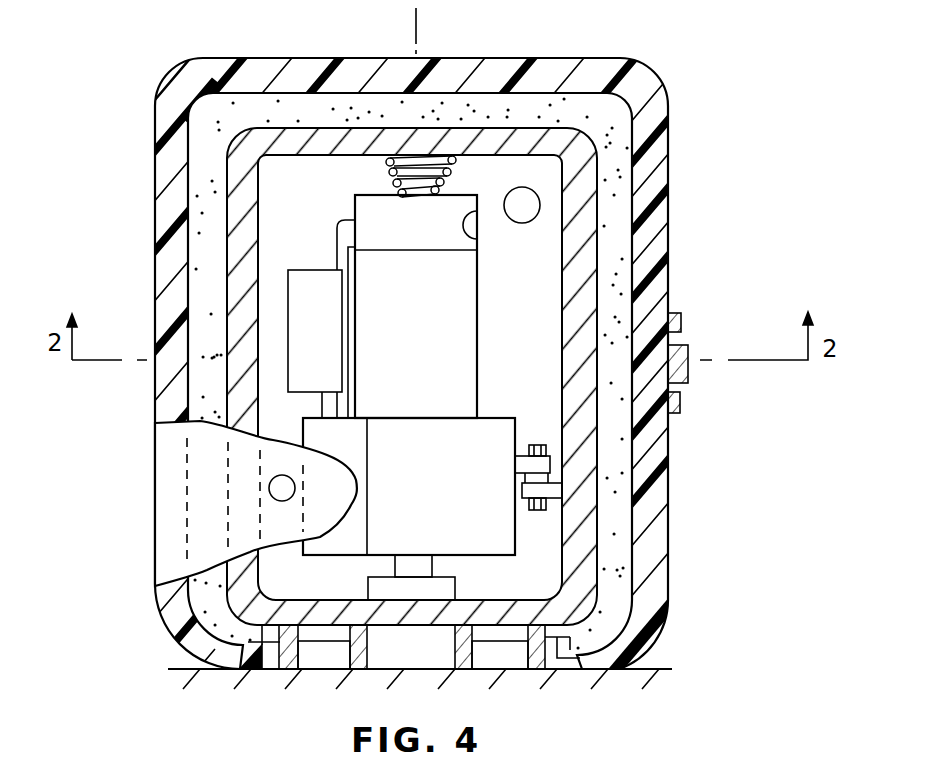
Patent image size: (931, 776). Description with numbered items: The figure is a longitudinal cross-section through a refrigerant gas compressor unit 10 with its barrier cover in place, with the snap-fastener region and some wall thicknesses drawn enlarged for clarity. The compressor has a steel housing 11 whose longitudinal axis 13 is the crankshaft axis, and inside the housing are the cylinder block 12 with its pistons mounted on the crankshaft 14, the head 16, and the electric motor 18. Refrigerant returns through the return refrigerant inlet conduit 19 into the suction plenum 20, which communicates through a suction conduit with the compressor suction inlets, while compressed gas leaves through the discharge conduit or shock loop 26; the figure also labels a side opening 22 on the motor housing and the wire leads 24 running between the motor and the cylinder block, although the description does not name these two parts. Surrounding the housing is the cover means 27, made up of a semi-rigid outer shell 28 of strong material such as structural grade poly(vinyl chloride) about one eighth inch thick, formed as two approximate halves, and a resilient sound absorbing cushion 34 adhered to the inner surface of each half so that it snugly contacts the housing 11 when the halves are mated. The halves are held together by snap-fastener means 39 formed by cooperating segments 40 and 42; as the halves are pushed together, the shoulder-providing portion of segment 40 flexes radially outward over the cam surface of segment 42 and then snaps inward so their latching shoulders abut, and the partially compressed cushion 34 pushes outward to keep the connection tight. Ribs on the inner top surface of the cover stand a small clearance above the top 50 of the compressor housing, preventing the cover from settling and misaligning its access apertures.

The compressor unit 10 is at (404, 374).
The steel housing 11 is at (580, 152).
The cylinder block 12 is at (413, 506).
The longitudinal axis 13 is at (416, 23).
The crankshaft 14 is at (388, 563).
The head 16 is at (340, 432).
The electric motor 18 is at (398, 336).
The return refrigerant inlet conduit 19 is at (540, 203).
The suction plenum 20 is at (370, 207).
The side contact 22 is at (470, 228).
The wire leads 24 is at (338, 242).
The discharge conduit or shock loop 26 is at (270, 488).
The cover means 27 is at (668, 215).
The semi-rigid outer shell 28 is at (404, 389).
The resilient sound absorbing cushion 34 is at (603, 287).
The snap-fastener means 39 is at (700, 392).
The segment 40 is at (682, 318).
The segment 42 is at (690, 372).
The top of the compressor housing 50 is at (440, 130).